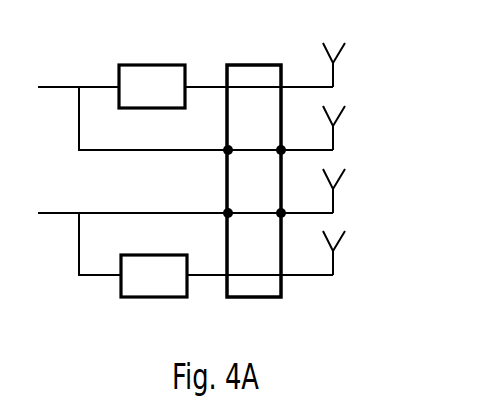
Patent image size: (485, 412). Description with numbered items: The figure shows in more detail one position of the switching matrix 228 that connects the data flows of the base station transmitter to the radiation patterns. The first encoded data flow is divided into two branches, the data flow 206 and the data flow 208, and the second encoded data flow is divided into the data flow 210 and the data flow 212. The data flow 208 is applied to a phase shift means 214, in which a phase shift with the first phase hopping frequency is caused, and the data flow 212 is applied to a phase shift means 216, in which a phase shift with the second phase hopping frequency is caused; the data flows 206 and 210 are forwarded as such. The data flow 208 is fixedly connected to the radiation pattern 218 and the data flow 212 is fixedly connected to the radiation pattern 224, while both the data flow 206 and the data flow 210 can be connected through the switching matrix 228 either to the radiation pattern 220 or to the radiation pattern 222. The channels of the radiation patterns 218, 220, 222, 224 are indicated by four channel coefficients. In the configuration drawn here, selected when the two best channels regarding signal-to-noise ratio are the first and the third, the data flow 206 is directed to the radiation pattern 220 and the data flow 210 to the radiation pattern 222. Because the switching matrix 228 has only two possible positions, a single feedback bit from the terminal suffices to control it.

The data flow 206 is at (79, 115).
The data flow 208 is at (102, 86).
The data flow 210 is at (170, 212).
The data flow 212 is at (79, 258).
The phase shift means 214 is at (164, 65).
The phase shift means 216 is at (166, 297).
The radiation pattern 218 is at (333, 76).
The radiation pattern 220 is at (333, 139).
The radiation pattern 222 is at (333, 202).
The radiation pattern 224 is at (333, 264).
The switching matrix 228 is at (266, 65).